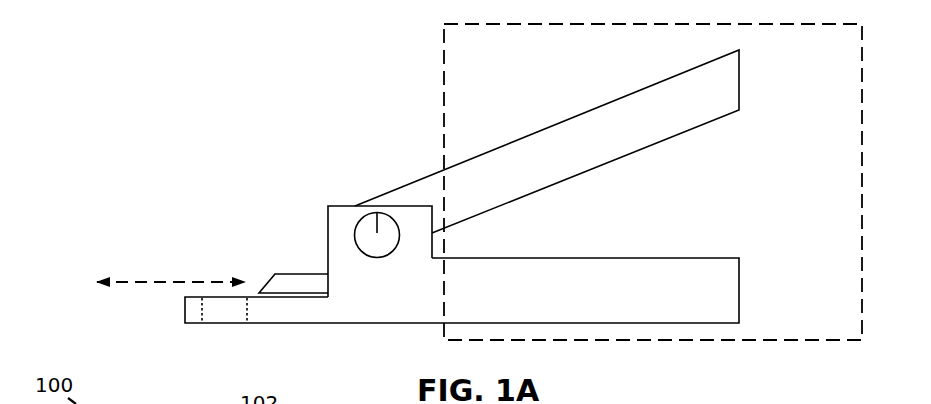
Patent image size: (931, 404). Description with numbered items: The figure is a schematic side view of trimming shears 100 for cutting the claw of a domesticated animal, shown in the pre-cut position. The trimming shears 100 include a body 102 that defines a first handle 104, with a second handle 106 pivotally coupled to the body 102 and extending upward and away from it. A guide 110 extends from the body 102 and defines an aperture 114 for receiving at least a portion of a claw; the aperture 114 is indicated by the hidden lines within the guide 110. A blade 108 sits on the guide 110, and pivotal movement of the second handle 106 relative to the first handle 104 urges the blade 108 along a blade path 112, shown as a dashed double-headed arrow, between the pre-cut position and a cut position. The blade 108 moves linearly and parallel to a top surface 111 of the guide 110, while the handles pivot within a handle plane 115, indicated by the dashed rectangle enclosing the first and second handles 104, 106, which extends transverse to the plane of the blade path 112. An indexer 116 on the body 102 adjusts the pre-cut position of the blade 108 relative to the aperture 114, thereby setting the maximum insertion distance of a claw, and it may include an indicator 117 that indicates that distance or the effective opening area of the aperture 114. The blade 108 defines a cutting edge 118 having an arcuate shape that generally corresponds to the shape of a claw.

The trimming shears 100 is at (135, 88).
The body 102 is at (293, 210).
The first handle 104 is at (740, 300).
The second handle 106 is at (740, 90).
The blade 108 is at (276, 272).
The guide 110 is at (305, 323).
The top surface 111 is at (190, 300).
The blade path 112 is at (168, 282).
The aperture 114 is at (202, 315).
The handle plane 115 is at (444, 57).
The indexer 116 is at (360, 227).
The indicator 117 is at (378, 232).
The cutting edge 118 is at (255, 285).